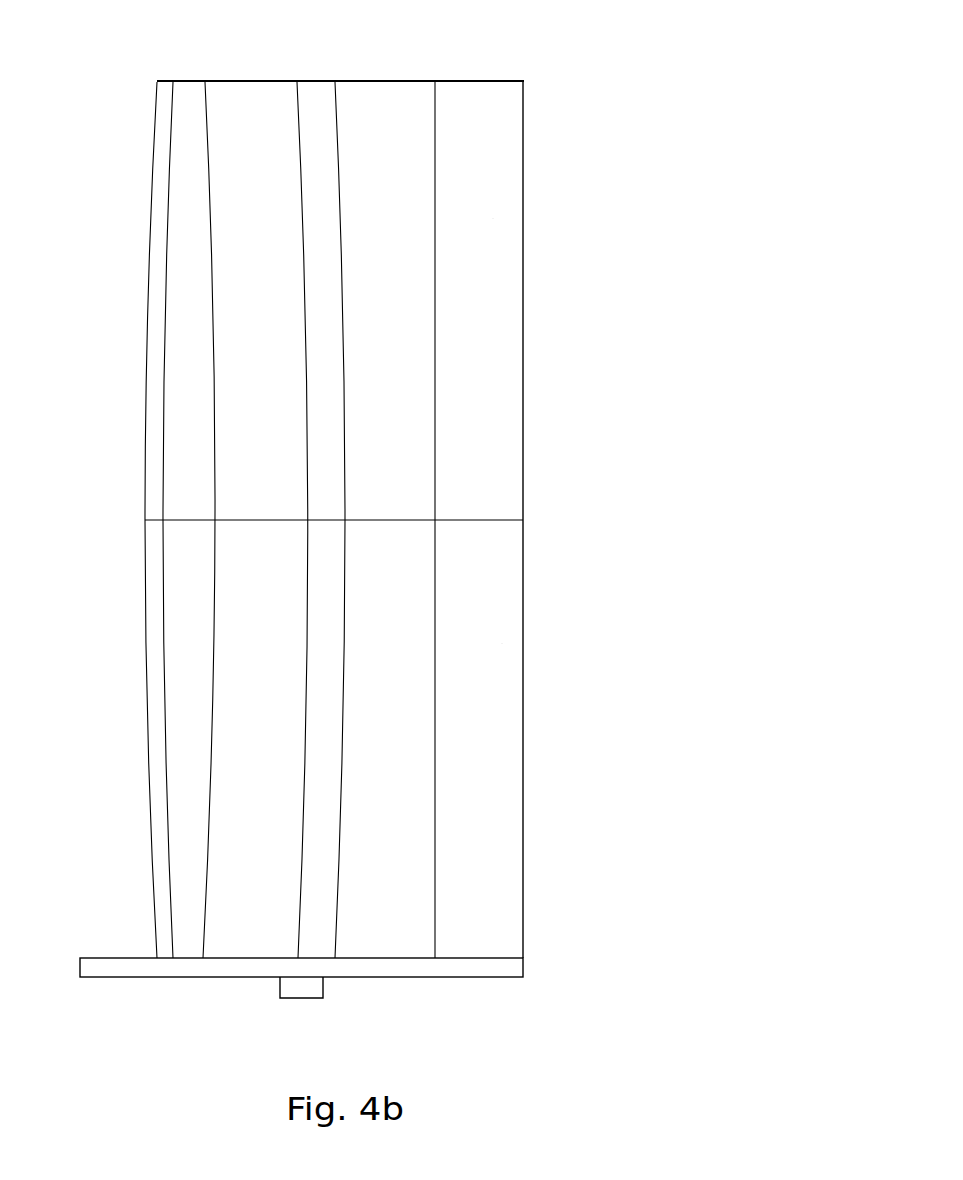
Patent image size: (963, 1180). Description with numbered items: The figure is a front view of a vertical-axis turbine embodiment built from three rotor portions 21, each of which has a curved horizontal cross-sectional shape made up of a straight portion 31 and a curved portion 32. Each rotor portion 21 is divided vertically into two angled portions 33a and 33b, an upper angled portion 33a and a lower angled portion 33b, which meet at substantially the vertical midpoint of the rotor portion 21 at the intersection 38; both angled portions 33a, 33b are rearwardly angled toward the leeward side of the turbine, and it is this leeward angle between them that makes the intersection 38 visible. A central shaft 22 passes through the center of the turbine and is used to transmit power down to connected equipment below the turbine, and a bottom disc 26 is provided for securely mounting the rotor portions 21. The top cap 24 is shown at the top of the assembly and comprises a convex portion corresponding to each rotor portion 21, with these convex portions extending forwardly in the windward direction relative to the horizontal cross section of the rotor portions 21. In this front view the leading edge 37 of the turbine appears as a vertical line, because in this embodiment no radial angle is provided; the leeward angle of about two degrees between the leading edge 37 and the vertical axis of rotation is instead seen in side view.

The rotor portion 21 is at (140, 217).
The central shaft 22 is at (302, 80).
The top cap 24 is at (424, 82).
The bottom disc 26 is at (500, 967).
The straight portion 31 is at (397, 348).
The curved portion 32 is at (482, 348).
The upper angled portion 33a is at (493, 218).
The lower angled portion 33b is at (502, 643).
The leading edge 37 is at (521, 370).
The intersection 38 is at (503, 519).